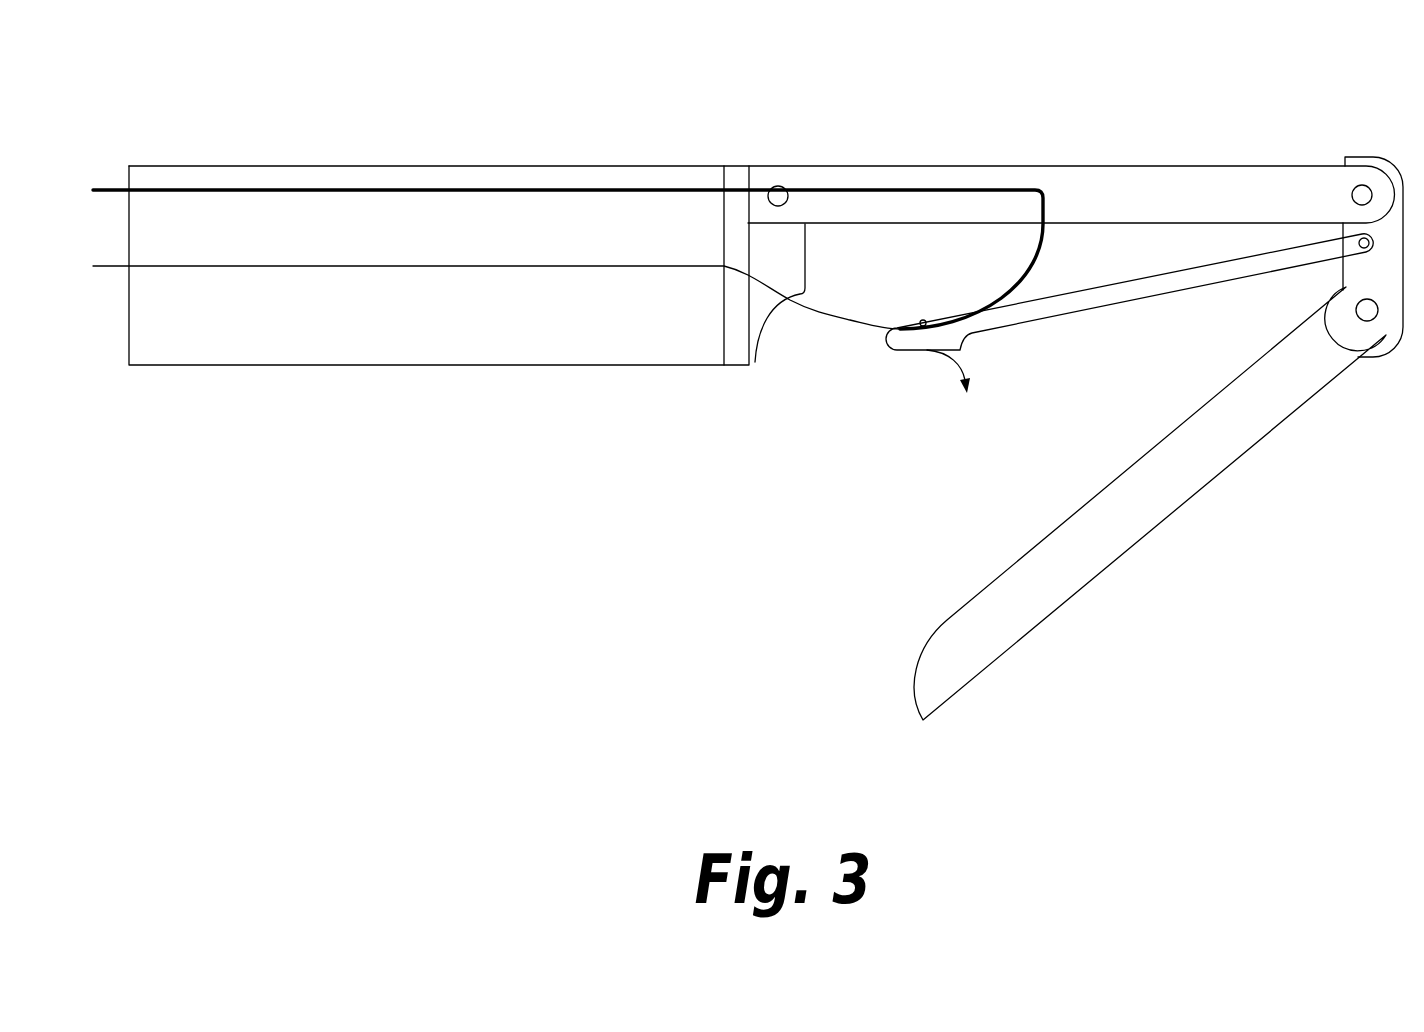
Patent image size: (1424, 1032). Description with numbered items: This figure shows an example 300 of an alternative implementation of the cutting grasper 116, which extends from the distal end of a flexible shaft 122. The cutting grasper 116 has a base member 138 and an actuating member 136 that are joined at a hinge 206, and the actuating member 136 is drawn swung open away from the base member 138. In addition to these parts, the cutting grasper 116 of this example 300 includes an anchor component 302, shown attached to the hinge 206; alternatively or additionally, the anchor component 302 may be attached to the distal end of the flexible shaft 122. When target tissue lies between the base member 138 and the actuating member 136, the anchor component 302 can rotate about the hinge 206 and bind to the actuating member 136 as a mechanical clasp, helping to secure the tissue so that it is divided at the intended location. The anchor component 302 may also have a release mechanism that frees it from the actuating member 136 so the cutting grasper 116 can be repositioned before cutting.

The example of alternative implementation of the cutting grasper 300 is at (177, 74).
The cutting grasper 116 is at (725, 88).
The flexible shaft 122 is at (427, 165).
The base member 138 is at (1118, 188).
The hinge 206 is at (1387, 243).
The anchor component 302 is at (930, 340).
The actuating member 136 is at (973, 642).